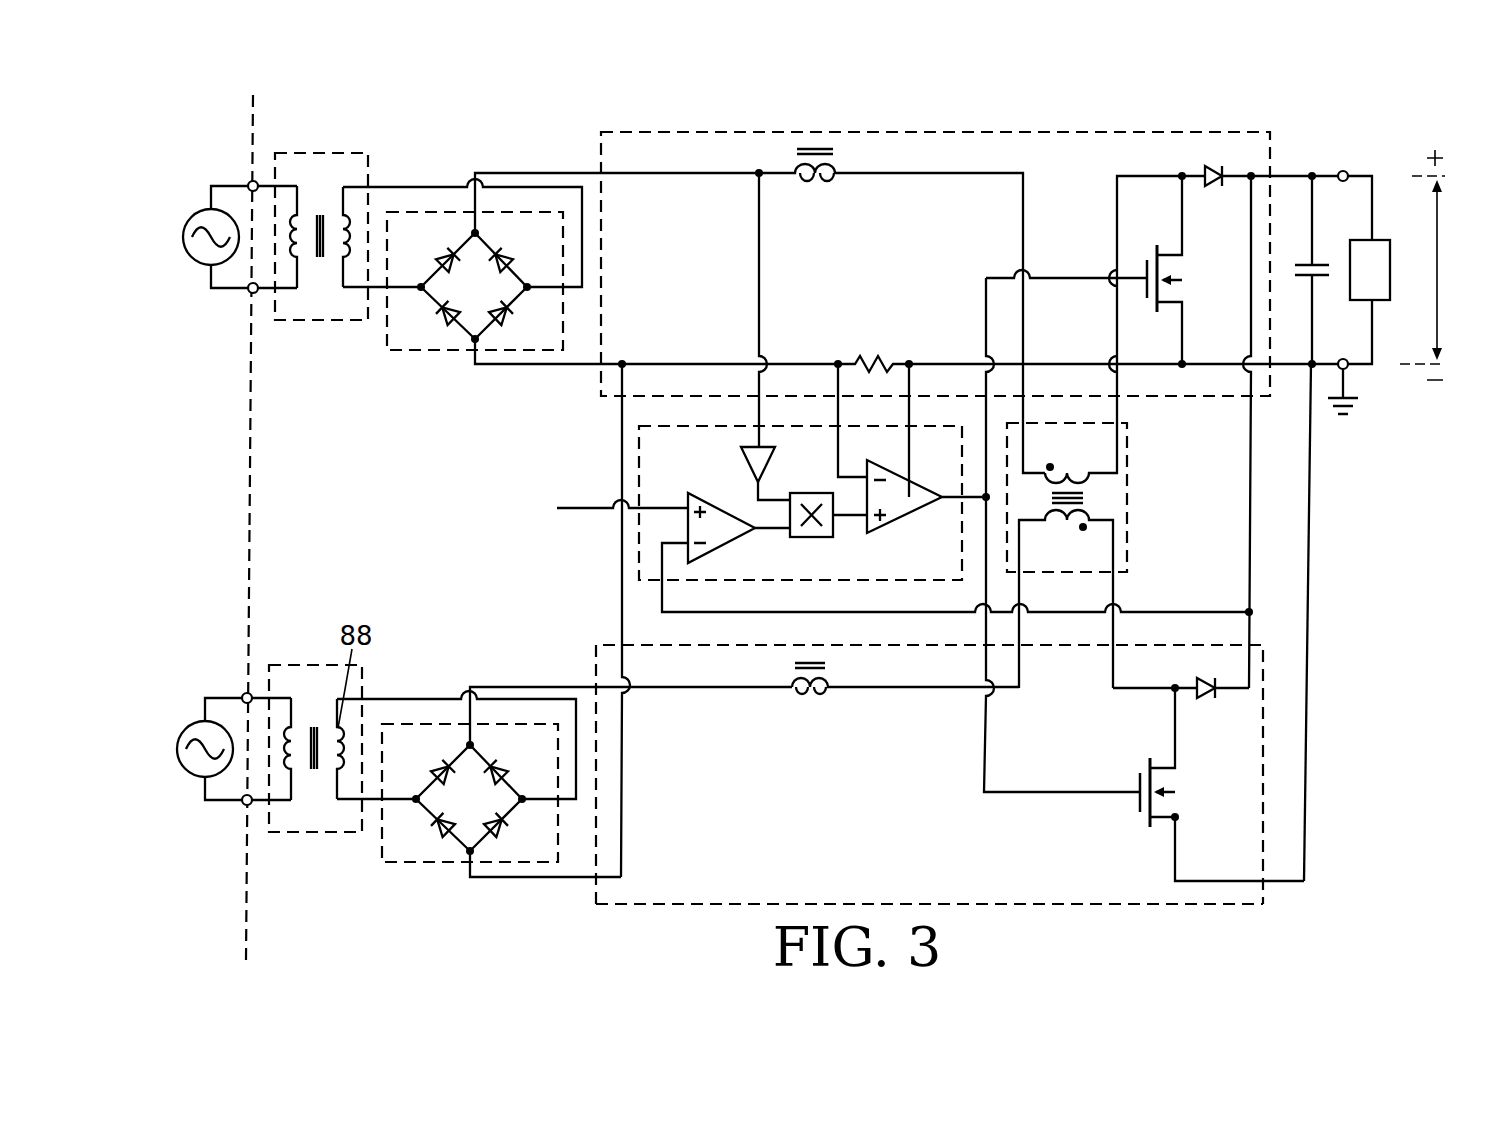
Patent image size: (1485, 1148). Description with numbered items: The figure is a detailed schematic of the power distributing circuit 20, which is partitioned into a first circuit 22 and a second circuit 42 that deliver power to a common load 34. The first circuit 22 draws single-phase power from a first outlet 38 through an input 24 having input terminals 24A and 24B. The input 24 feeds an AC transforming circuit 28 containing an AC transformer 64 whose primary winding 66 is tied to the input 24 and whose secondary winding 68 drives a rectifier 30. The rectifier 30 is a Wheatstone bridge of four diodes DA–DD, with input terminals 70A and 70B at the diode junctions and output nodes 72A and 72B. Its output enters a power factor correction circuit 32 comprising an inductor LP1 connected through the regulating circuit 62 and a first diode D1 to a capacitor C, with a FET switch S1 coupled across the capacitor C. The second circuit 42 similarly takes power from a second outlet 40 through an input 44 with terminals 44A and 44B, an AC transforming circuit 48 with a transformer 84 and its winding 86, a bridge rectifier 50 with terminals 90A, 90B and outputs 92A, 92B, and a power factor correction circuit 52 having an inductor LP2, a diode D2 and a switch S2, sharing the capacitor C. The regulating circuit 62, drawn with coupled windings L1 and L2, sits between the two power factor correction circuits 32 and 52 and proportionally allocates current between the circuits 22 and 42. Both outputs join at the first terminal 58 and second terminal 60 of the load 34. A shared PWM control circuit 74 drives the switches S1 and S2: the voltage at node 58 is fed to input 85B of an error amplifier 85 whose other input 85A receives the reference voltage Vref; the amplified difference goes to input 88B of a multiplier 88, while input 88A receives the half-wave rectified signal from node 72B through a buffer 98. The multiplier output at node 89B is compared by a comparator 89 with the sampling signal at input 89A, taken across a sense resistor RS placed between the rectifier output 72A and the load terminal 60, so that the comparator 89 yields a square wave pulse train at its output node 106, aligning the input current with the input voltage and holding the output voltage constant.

The power distributing circuit 20 is at (1390, 150).
The first circuit 22 is at (1325, 442).
The input 24 is at (236, 357).
The input terminal 24A is at (251, 182).
The input terminal 24B is at (250, 293).
The AC transforming circuit 28 is at (318, 322).
The rectifier 30 is at (445, 350).
The power factor correction circuit 32 is at (727, 130).
The load 34 is at (1385, 300).
The first outlet 38 is at (186, 226).
The second outlet 40 is at (178, 740).
The second circuit 42 is at (1326, 648).
The input 44 is at (223, 633).
The second input terminal 44A is at (243, 693).
The second input terminal 44B is at (243, 806).
The AC transforming circuit 48 is at (292, 836).
The rectifier 50 is at (435, 866).
The power factor correction circuit 52 is at (1082, 904).
The first terminal of the load 58 is at (1343, 171).
The second terminal of the load 60 is at (1350, 369).
The regulating circuit 62 is at (1128, 492).
The AC transformer 64 is at (321, 260).
The primary winding 66 is at (297, 212).
The secondary winding 68 is at (345, 212).
The input terminal of the rectifier 70A is at (378, 290).
The input terminal of the rectifier 70B is at (580, 288).
The output terminal of the rectifier 72A is at (495, 365).
The output node of the rectifier 72B is at (500, 172).
The PWM control circuit 74 is at (650, 582).
The transformer 84 is at (314, 772).
The error amplifier 85 is at (688, 530).
The input of the error amplifier 85A is at (688, 505).
The input of the error amplifier 85B is at (672, 548).
The second primary winding 86 is at (294, 728).
The multiplier 88 is at (830, 493).
The input of the multiplier 88A is at (775, 504).
The input of the multiplier 88B is at (805, 530).
The comparator 89 is at (917, 518).
The input of the comparator 89A is at (838, 468).
The input of the comparator 89B is at (852, 518).
The second secondary lead 90A is at (374, 802).
The second secondary lead 90B is at (572, 803).
The second rectifier output lead 92A is at (480, 878).
The second rectifier output lead 92B is at (493, 686).
The buffer 98 is at (746, 462).
The output node 106 is at (945, 495).
The inductor LP1 is at (902, 311).
The inductor LP2 is at (903, 698).
The sense resistor RS is at (873, 409).
The switch S1 is at (1105, 270).
The switch S2 is at (1222, 784).
The first diode D1 is at (1218, 195).
The second diode D2 is at (1183, 455).
The capacitor C is at (1294, 270).
The first coupled winding L1 is at (1113, 329).
The second coupled winding L2 is at (1066, 599).